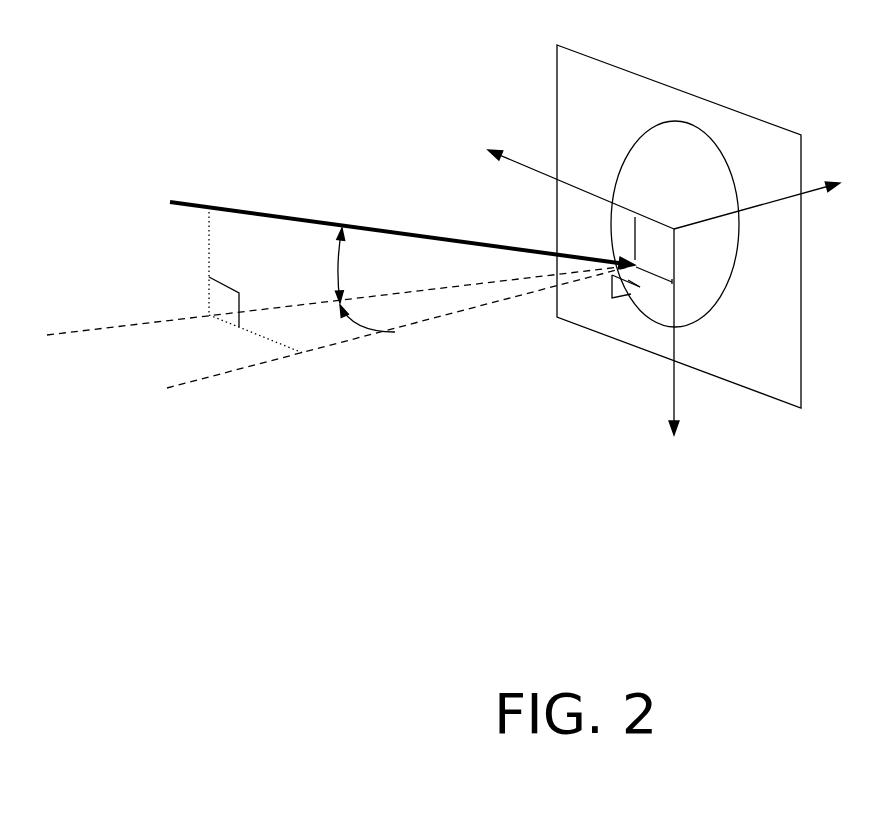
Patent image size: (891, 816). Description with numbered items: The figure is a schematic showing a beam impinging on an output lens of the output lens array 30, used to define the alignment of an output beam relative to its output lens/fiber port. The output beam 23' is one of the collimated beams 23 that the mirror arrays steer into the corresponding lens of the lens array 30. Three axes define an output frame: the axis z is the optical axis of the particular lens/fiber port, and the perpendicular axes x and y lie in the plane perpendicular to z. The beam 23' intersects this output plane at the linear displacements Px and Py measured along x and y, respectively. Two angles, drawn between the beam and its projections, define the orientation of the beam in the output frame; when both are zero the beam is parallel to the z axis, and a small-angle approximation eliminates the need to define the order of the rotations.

The output lens array 30 is at (664, 77).
The output beam 23' is at (402, 215).
The collimated beam 23 is at (402, 215).
The x axis x is at (692, 333).
The y axis y is at (581, 171).
The z axis z is at (769, 205).
The linear displacement in x Px is at (662, 285).
The linear displacement in y Py is at (641, 217).